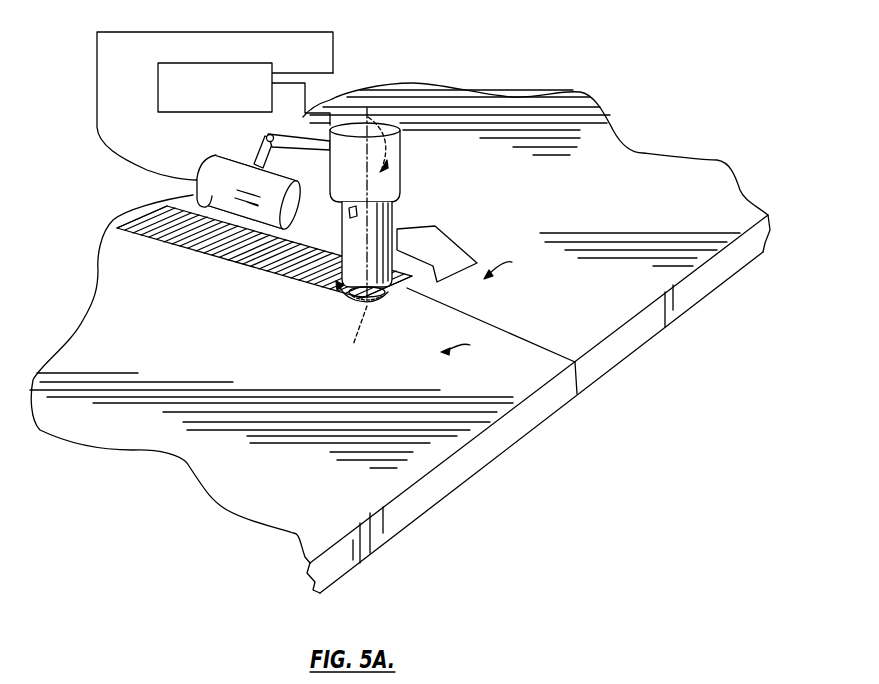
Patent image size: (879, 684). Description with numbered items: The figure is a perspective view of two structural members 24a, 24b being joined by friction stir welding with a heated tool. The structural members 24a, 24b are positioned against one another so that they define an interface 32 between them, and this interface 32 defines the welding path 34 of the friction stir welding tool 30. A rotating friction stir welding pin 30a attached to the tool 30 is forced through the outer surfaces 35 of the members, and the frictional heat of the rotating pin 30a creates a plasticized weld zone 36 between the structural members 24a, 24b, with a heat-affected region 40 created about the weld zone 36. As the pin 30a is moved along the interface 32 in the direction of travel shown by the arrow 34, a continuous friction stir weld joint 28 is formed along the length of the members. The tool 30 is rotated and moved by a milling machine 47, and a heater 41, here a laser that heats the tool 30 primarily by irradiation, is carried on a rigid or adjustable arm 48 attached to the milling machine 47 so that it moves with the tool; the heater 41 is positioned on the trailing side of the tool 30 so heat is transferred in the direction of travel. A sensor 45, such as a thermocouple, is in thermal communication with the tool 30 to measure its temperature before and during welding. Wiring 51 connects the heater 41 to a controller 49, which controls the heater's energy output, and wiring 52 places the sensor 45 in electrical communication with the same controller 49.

The structural member 24a is at (535, 372).
The structural member 24b is at (612, 305).
The friction stir weld joint 28 is at (262, 235).
The friction stir welding tool 30 is at (378, 300).
The friction stir welding pin 30a is at (363, 240).
The interface 32 is at (483, 317).
The welding path / direction of travel arrow 34 is at (453, 250).
The outer surfaces 35 is at (491, 305).
The weld zone 36 is at (340, 290).
The heat-affected region 40 is at (190, 243).
The heater 41 is at (190, 211).
The sensor 45 is at (348, 212).
The milling machine 47 is at (303, 138).
The arm 48 is at (266, 133).
The controller 49 is at (208, 63).
The wiring 51 is at (97, 108).
The wiring 52 is at (386, 169).